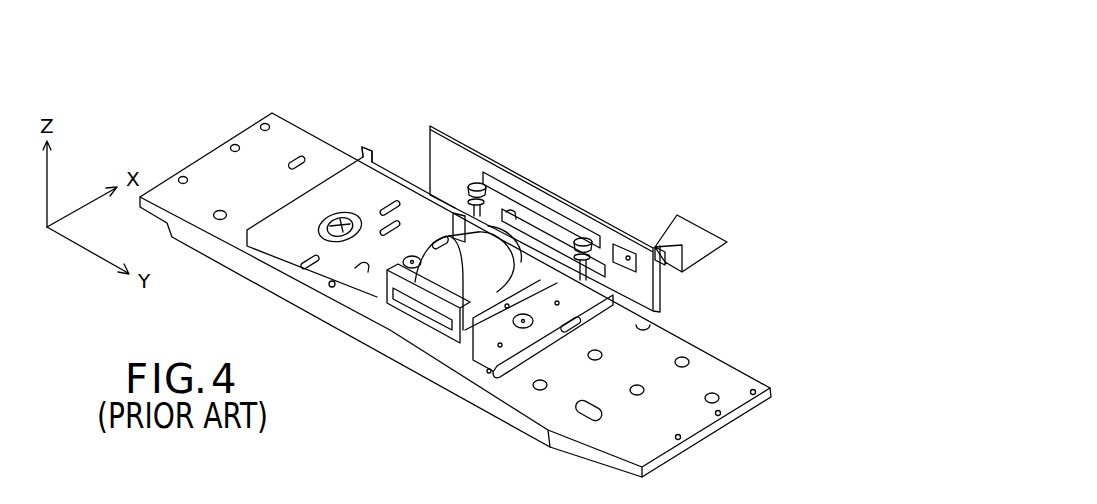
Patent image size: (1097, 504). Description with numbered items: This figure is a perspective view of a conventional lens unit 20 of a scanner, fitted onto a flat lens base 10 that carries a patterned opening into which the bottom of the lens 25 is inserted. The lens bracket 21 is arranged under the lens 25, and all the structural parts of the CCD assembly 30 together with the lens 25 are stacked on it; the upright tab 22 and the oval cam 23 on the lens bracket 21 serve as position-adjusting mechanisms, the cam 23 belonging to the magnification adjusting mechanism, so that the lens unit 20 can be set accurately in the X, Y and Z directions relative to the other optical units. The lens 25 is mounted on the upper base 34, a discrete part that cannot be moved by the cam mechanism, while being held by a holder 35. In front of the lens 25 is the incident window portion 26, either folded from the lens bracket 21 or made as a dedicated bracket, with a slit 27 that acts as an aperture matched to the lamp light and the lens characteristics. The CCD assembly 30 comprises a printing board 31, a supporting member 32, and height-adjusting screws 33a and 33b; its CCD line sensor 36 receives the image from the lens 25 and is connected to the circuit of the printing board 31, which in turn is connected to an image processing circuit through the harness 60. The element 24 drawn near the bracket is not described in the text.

The lens base 10 is at (702, 428).
The lens unit 20 is at (388, 66).
The lens bracket 21 is at (287, 250).
The position-adjusting mechanism 22 is at (367, 232).
The oval cam 23 is at (343, 220).
The support bracket 24 is at (402, 225).
The lens 25 is at (433, 287).
The incident window portion 26 is at (440, 330).
The slit 27 is at (430, 315).
The CCD assembly 30 is at (640, 181).
The printing board 31 is at (510, 213).
The supporting member 32 is at (527, 212).
The height-adjusting screw 33a is at (468, 190).
The height-adjusting screw 33b is at (588, 238).
The upper base 34 is at (428, 243).
The holder 35 is at (498, 275).
The CCD line sensor 36 is at (530, 212).
The harness 60 is at (686, 233).